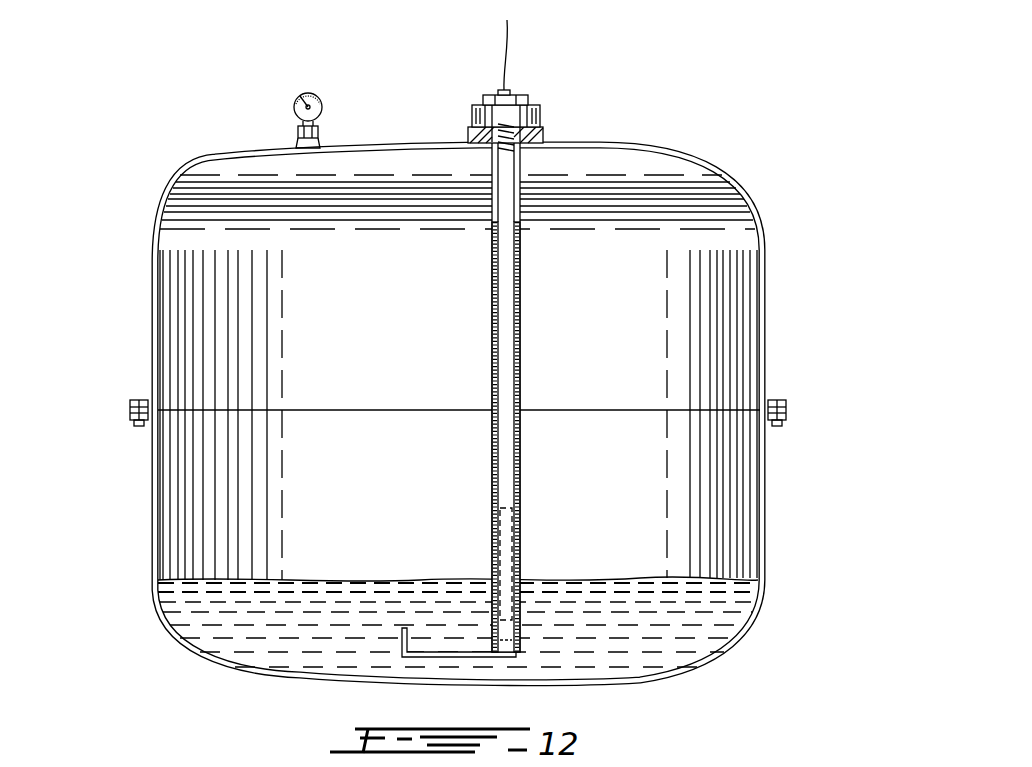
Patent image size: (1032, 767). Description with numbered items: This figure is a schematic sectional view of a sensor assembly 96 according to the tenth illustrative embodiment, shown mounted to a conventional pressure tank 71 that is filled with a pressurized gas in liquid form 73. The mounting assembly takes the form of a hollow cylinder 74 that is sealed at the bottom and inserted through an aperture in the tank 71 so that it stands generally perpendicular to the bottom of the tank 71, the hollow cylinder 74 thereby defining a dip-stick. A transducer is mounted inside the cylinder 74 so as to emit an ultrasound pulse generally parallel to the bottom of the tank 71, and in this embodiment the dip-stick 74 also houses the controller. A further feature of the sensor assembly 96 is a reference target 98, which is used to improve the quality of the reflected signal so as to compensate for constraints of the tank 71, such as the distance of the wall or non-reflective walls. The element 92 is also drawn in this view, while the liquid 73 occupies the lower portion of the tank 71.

The tank 71 is at (758, 197).
The pressurized gas in liquid form 73 is at (675, 636).
The hollow cylinder 74 is at (517, 263).
The sorbent packing 92 is at (302, 580).
The sensor assembly 96 is at (527, 623).
The reference target 98 is at (403, 637).